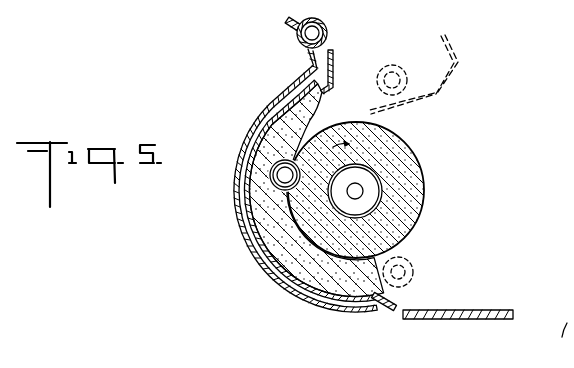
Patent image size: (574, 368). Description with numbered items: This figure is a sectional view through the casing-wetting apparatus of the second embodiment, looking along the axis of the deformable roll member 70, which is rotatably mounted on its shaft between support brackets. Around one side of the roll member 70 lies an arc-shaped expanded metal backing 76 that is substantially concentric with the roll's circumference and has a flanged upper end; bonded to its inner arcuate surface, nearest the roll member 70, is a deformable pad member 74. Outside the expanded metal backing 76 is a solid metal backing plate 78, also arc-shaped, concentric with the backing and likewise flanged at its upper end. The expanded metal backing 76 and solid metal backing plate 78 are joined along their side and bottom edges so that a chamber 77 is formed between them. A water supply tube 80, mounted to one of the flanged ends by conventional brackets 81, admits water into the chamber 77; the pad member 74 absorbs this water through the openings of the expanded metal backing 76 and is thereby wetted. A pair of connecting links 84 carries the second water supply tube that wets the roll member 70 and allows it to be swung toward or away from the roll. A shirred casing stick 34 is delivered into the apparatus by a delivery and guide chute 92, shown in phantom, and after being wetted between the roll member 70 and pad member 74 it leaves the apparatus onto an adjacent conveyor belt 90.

The shirred casing stick 34 is at (270, 190).
The deformable roll member 70 is at (424, 183).
The deformable pad member 74 is at (327, 100).
The expanded metal backing 76 is at (272, 110).
The chamber 77 is at (315, 68).
The solid metal backing plate 78 is at (243, 167).
The water supply tube 80 is at (338, 34).
The brackets 81 is at (347, 2).
The connecting links 84 is at (226, 8).
The conveyor belt 90 is at (480, 280).
The delivery and guide chute 92 is at (460, 70).